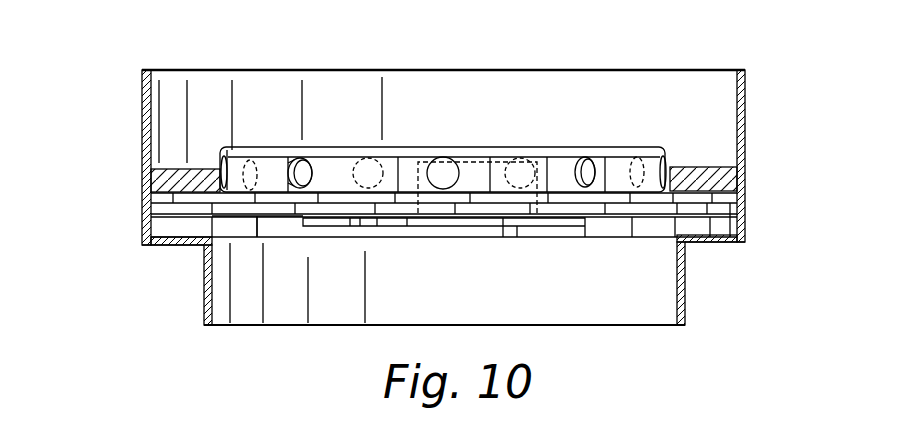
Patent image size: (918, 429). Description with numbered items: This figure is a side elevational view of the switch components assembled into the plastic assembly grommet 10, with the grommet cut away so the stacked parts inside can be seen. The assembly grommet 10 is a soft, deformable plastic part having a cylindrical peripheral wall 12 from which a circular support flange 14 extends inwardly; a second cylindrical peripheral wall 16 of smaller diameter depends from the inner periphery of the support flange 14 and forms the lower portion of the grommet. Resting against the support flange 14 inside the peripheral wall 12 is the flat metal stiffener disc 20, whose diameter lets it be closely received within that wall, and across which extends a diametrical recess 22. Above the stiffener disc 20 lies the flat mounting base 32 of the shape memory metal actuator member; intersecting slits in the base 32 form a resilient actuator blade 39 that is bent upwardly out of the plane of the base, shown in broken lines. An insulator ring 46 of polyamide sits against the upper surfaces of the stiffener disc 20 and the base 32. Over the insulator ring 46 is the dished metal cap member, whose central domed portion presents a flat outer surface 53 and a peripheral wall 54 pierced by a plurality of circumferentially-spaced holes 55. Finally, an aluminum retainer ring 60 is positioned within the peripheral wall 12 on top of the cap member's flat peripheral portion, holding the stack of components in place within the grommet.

The assembly grommet 10 is at (746, 113).
The cylindrical peripheral wall 12 is at (141, 96).
The circular support flange 14 is at (717, 245).
The cylindrical peripheral wall 16 is at (204, 289).
The stiffener disc 20 is at (278, 240).
The diametrical recess 22 is at (307, 220).
The mounting base 32 is at (517, 226).
The resilient actuator blade 39 is at (483, 157).
The insulator ring 46 is at (198, 210).
The flat outer surface 53 is at (278, 156).
The peripheral wall 54 is at (410, 158).
The holes 55 is at (450, 158).
The retainer ring 60 is at (197, 170).